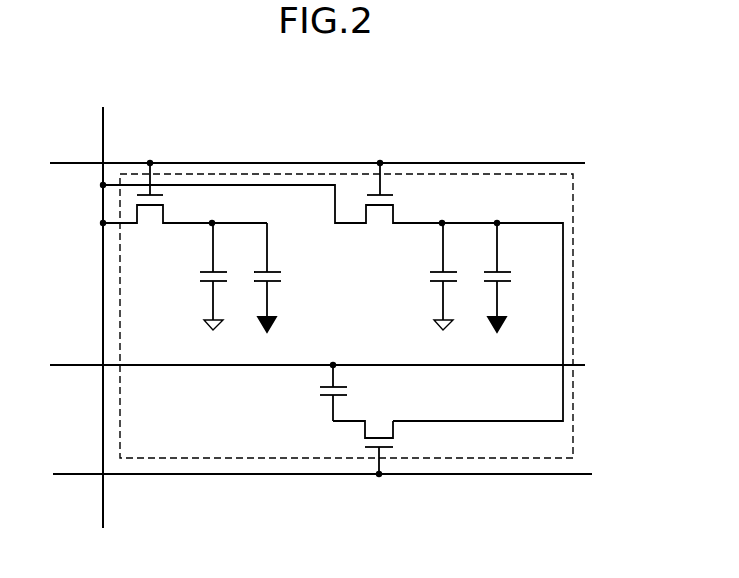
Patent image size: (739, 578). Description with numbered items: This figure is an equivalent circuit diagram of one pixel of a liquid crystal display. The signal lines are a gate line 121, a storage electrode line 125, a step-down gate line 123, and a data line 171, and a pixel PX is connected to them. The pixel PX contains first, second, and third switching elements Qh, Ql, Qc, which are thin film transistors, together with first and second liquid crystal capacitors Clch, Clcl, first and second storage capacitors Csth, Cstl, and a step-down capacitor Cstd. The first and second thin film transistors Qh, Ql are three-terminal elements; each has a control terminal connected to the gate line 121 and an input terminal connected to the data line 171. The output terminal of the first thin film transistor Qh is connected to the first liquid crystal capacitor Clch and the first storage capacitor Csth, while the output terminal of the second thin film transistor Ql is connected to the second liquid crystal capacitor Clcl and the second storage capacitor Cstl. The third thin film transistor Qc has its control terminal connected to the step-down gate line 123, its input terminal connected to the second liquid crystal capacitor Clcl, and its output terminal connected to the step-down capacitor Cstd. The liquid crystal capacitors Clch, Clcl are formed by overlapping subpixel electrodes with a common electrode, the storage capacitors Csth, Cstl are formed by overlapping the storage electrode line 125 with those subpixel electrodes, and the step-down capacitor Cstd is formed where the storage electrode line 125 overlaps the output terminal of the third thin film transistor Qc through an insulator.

The data line 171 is at (103, 124).
The gate line 121 is at (336, 163).
The storage electrode line 125 is at (336, 365).
The step-down gate line 123 is at (340, 475).
The pixel PX is at (240, 174).
The first switching element Qh is at (185, 205).
The second switching element Ql is at (333, 292).
The third switching element Qc is at (363, 436).
The first liquid crystal capacitor Clch is at (190, 276).
The first storage capacitor Csth is at (291, 277).
The second liquid crystal capacitor Clcl is at (422, 276).
The second storage capacitor Cstl is at (518, 277).
The step-down capacitor Cstd is at (310, 393).